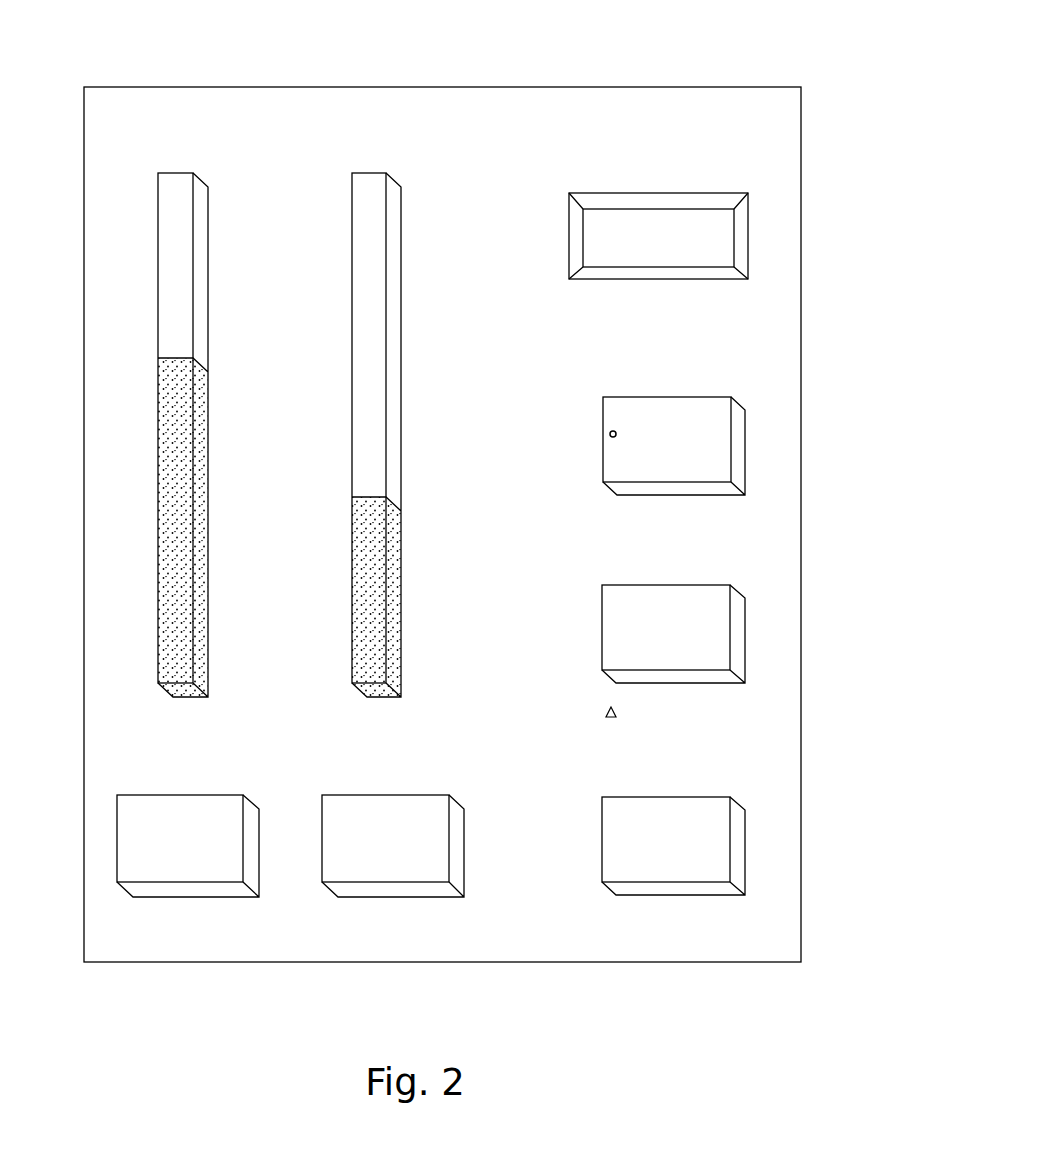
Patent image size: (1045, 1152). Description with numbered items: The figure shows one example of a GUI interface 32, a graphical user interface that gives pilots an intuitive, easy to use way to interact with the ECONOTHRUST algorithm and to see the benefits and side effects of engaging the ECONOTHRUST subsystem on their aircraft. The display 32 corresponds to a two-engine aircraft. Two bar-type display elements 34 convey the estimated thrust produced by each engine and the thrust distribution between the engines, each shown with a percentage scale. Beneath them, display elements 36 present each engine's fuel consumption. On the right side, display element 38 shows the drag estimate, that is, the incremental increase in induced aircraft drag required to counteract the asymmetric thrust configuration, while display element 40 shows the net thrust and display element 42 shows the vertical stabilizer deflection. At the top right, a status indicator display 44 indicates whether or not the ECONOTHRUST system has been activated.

The GUI interface 32 is at (668, 64).
The thrust distribution display elements 34 is at (157, 275).
The fuel consumption display elements 36 is at (127, 858).
The drag estimate display element 38 is at (722, 633).
The net thrust display element 40 is at (722, 850).
The vertical stabilizer deflection display element 42 is at (737, 439).
The status indicator display 44 is at (734, 237).